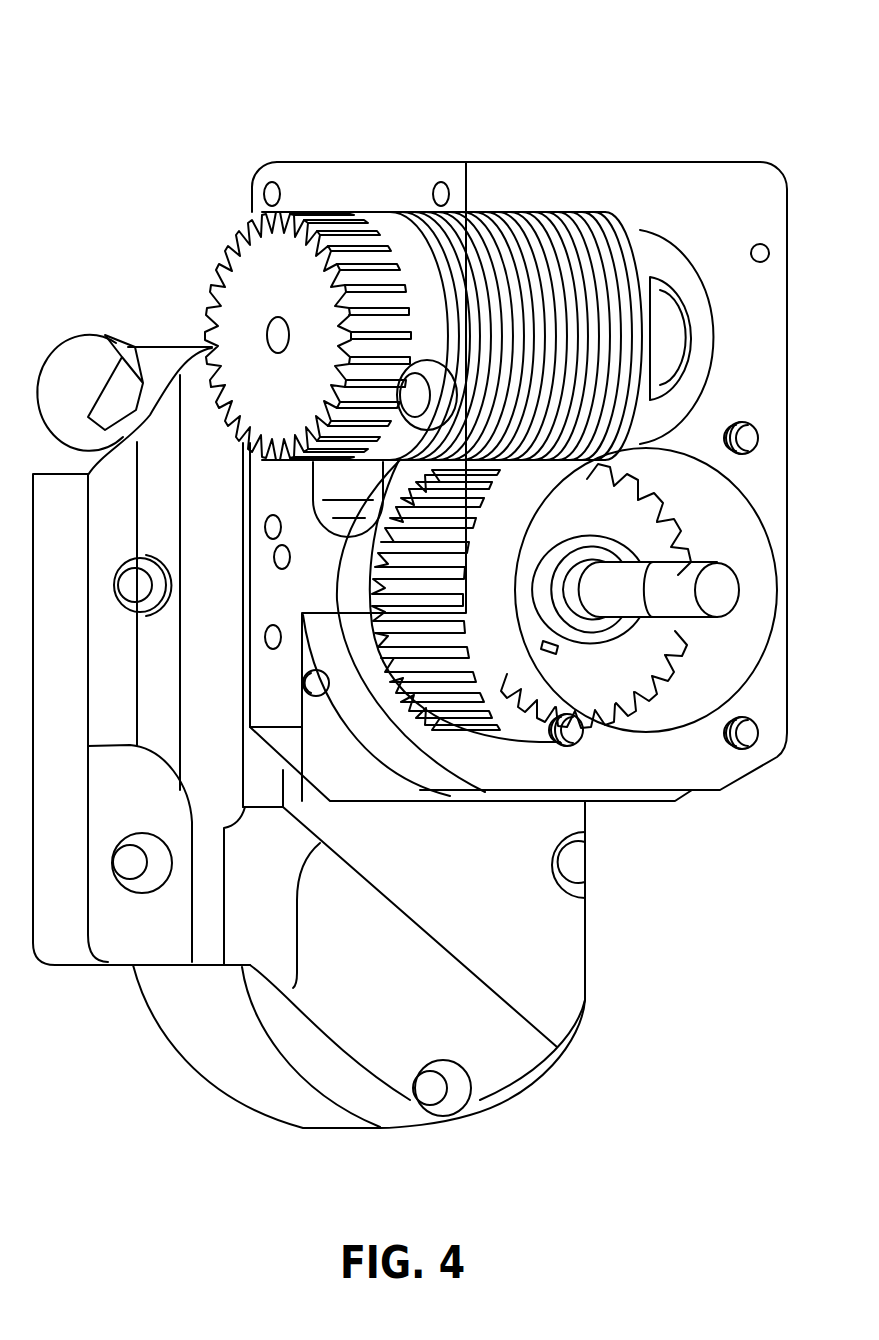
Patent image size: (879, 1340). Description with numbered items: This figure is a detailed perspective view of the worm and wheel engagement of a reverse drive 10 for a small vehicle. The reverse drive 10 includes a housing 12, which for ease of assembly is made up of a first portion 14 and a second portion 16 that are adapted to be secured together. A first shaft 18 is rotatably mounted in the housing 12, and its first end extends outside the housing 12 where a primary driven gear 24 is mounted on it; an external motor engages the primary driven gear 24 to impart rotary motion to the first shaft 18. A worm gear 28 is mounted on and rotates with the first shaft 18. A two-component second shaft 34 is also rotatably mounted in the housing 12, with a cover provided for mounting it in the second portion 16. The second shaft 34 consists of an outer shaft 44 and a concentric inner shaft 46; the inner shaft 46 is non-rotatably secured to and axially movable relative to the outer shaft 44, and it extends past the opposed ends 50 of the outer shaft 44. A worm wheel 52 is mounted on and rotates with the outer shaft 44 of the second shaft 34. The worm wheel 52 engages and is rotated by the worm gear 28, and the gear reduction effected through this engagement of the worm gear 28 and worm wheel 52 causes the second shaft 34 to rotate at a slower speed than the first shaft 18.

The reverse drive 10 is at (137, 129).
The housing 12 is at (648, 852).
The first portion 14 is at (765, 392).
The second portion 16 is at (567, 953).
The first shaft 18 is at (677, 338).
The primary driven gear 24 is at (222, 278).
The worm gear 28 is at (543, 237).
The second shaft 34 is at (638, 640).
The outer shaft 44 is at (560, 538).
The inner shaft 46 is at (648, 608).
The opposed ends 50 is at (622, 542).
The worm wheel 52 is at (620, 683).